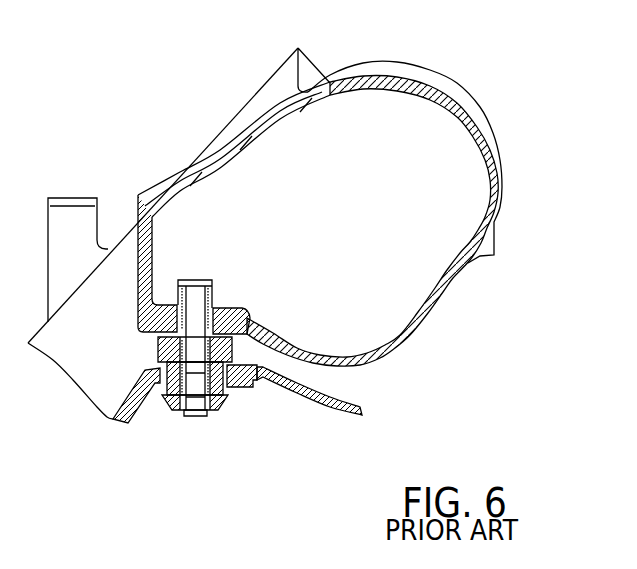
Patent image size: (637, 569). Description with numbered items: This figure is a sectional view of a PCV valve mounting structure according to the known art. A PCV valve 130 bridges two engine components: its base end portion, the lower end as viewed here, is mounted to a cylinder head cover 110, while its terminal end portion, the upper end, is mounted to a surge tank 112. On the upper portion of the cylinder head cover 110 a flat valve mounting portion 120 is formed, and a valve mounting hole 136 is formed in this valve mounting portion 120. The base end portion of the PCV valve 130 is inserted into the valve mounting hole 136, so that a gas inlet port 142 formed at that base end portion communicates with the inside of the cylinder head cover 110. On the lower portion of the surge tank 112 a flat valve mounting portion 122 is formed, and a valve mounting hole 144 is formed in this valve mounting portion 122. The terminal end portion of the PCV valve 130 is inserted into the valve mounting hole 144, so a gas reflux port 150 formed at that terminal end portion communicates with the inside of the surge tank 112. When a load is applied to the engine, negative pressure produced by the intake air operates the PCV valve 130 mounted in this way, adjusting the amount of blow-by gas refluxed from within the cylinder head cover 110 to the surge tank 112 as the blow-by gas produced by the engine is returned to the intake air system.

The cylinder head cover 110 is at (368, 400).
The surge tank 112 is at (418, 80).
The valve mounting portion 120 is at (257, 387).
The valve mounting portion 122 is at (212, 298).
The PCV valve 130 is at (203, 258).
The valve mounting hole 136 is at (217, 413).
The gas inlet port 142 is at (185, 416).
The valve mounting hole 144 is at (196, 281).
The gas reflux port 150 is at (191, 283).